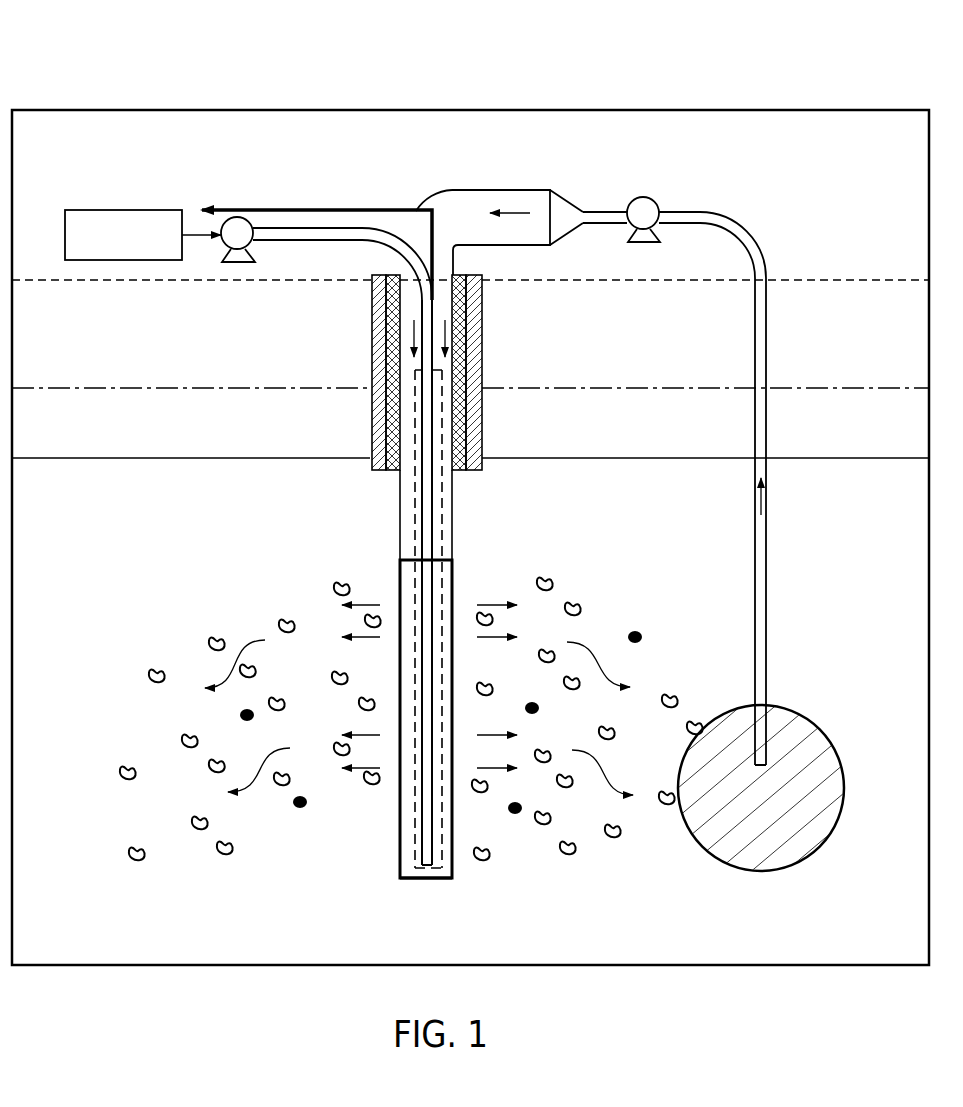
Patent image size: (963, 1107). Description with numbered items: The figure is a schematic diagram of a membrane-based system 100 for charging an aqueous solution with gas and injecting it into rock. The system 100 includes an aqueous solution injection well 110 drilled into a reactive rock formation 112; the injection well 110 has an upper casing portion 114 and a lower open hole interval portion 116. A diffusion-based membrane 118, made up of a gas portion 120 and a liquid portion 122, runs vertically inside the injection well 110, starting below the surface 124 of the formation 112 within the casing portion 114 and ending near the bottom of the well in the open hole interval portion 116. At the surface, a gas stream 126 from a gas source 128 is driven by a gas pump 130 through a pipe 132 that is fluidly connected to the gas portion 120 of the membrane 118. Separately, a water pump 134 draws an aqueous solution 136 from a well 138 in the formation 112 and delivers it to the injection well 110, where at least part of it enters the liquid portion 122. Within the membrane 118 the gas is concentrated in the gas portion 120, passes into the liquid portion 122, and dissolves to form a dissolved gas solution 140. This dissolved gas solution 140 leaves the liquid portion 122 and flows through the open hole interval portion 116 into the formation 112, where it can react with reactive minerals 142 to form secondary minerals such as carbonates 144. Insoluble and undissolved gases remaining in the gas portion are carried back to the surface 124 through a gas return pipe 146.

The membrane-based system 100 is at (470, 487).
The aqueous solution injection well 110 is at (368, 514).
The reactive rock formation 112 is at (470, 488).
The casing portion 114 is at (488, 372).
The open hole interval portion 116 is at (380, 868).
The diffusion-based membrane 118 is at (489, 582).
The gas portion 120 is at (483, 619).
The liquid portion 122 is at (483, 435).
The surface 124 is at (470, 229).
The gas stream 126 is at (203, 182).
The gas source 128 is at (111, 186).
The gas pump 130 is at (272, 200).
The pipe 132 is at (343, 220).
The water pump 134 is at (675, 178).
The aqueous solution 136 is at (752, 488).
The well 138 is at (790, 761).
The dissolved gas solution 140 is at (384, 698).
The reactive minerals 142 is at (411, 700).
The carbonates 144 is at (387, 722).
The gas return pipe 146 is at (316, 210).